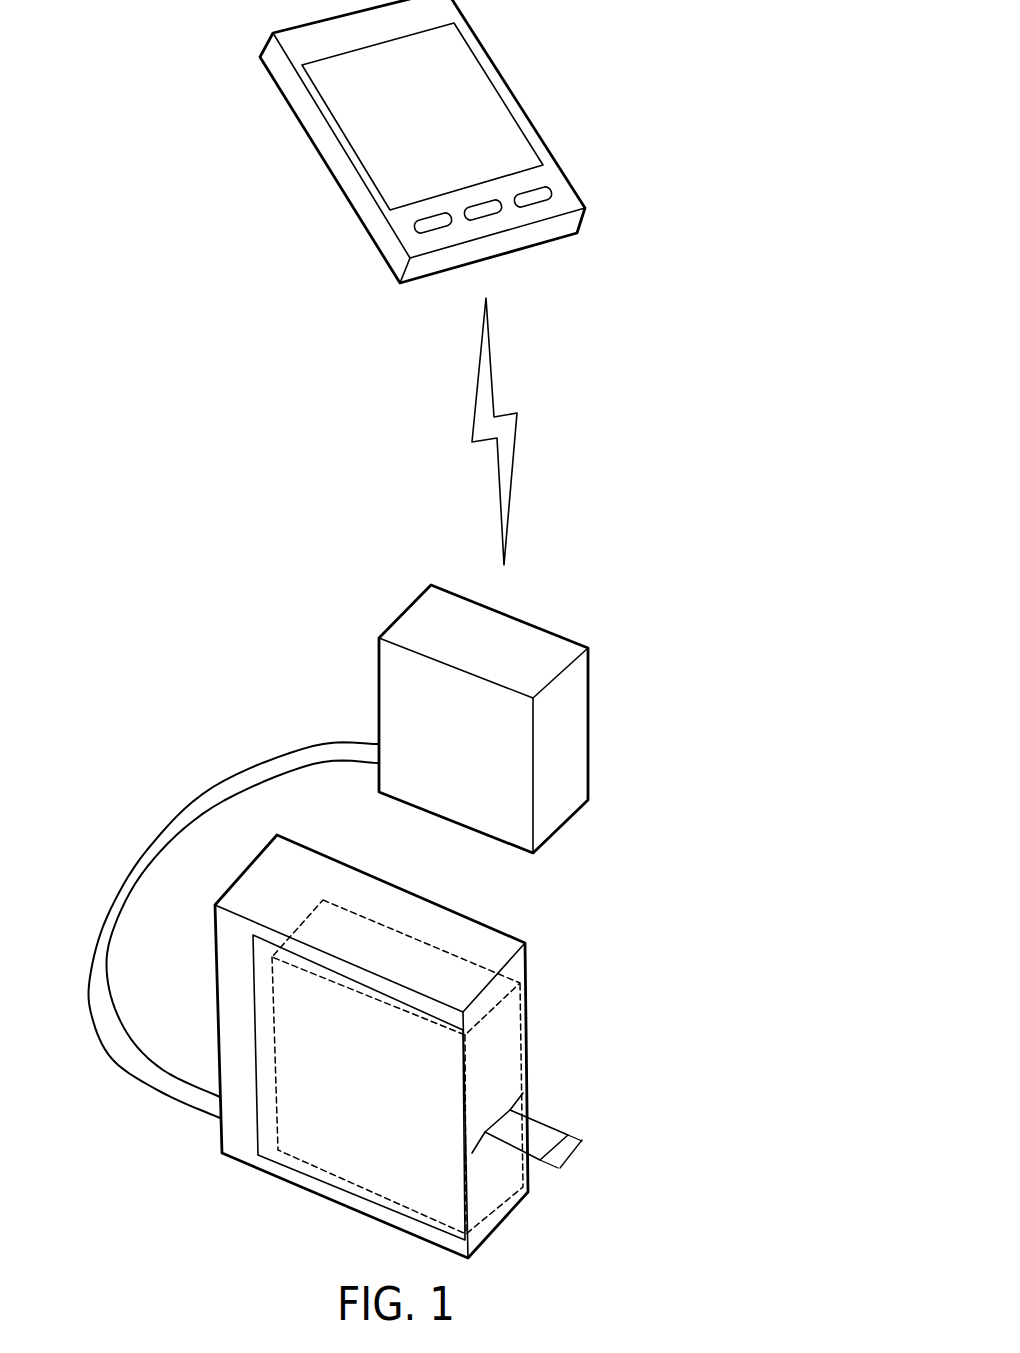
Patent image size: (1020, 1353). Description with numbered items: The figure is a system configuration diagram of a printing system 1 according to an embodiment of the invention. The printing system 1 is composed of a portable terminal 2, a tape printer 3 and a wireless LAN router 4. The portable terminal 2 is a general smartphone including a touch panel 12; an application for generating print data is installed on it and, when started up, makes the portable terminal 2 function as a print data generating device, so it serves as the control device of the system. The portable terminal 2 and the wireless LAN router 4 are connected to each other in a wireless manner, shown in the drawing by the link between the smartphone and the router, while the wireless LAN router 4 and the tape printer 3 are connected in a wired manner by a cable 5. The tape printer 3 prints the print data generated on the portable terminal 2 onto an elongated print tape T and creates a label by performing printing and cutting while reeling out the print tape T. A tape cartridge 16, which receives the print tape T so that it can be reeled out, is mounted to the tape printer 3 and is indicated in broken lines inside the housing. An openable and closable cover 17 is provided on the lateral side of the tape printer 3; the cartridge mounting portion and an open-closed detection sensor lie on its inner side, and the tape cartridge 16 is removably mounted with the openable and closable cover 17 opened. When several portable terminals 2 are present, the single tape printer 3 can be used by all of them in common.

The printing system 1 is at (716, 39).
The portable terminal 2 is at (549, 67).
The touch panel 12 is at (515, 134).
The tape printer 3 is at (585, 953).
The wireless LAN router 4 is at (517, 628).
The cable 5 is at (167, 832).
The tape cartridge 16 is at (413, 938).
The openable and closable cover 17 is at (270, 1137).
The print tape T is at (542, 1132).